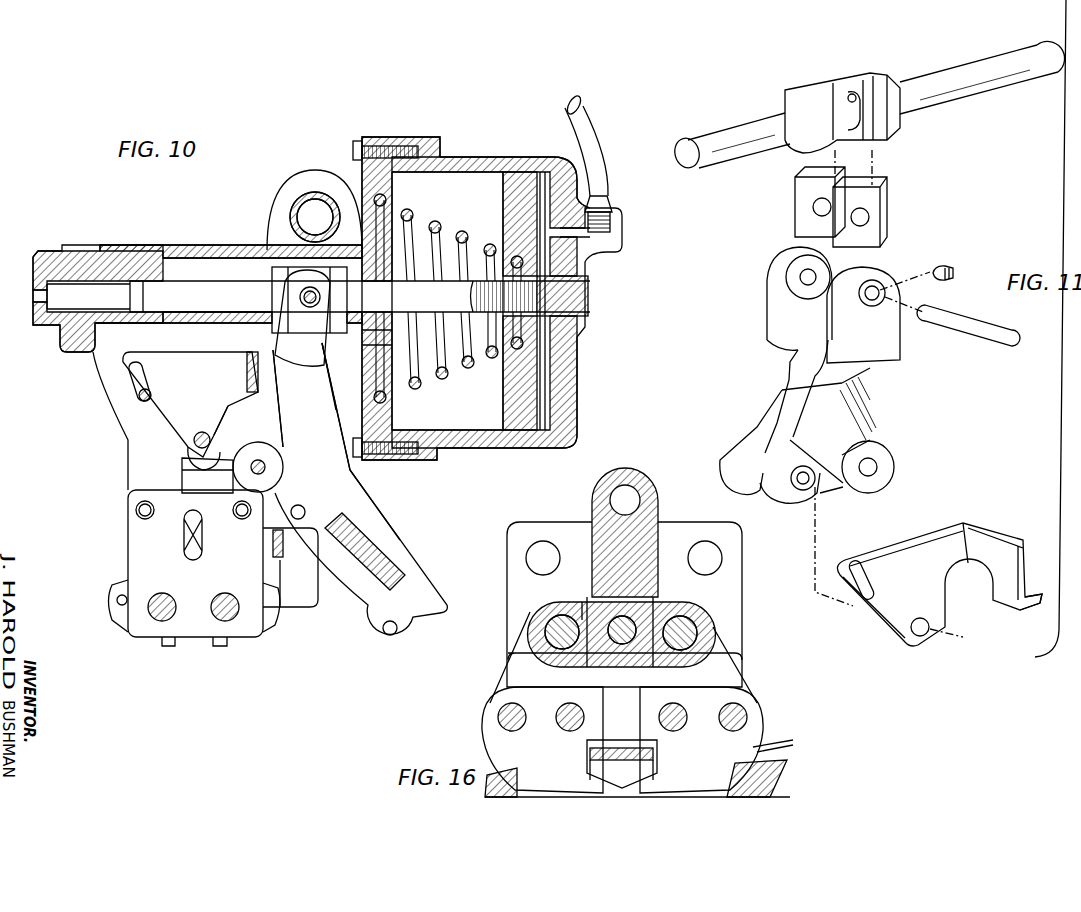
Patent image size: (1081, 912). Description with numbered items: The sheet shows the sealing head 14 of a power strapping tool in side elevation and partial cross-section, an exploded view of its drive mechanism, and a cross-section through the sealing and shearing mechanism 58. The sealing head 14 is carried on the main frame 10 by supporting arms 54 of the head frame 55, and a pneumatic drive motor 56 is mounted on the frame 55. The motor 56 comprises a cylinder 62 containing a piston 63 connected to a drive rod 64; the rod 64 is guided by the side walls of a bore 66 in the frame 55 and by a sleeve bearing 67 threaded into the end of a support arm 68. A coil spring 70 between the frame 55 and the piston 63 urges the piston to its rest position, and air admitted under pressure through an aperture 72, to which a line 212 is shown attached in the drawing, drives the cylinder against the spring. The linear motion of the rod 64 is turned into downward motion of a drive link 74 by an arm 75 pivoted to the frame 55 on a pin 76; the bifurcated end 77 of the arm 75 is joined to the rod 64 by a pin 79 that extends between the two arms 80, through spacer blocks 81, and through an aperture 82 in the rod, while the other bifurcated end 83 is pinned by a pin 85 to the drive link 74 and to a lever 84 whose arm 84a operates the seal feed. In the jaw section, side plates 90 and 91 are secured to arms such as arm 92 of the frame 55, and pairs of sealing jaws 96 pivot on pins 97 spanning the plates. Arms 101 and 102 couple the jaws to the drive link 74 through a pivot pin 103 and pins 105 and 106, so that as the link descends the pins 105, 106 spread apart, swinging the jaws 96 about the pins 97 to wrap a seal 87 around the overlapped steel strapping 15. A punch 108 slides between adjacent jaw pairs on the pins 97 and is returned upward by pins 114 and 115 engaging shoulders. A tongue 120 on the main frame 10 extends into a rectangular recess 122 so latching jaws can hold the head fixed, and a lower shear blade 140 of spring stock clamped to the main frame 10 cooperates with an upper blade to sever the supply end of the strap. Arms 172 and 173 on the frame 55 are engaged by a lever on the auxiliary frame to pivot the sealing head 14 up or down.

In FIG. 16, the main frame 10 is at (780, 787).
In FIG. 10, the sealing head 14 is at (399, 132).
In FIG. 16, the steel strapping 15 is at (633, 752).
In FIG. 10, the supporting arms 54 is at (407, 554).
In FIG. 10, the frame 55 is at (366, 486).
In FIG. 10, the pneumatic drive motor 56 is at (590, 401).
In FIG. 10, the sealing and shearing mechanism 58 is at (129, 649).
In FIG. 16, the sealing and shearing mechanism 58 is at (744, 650).
In FIG. 10, the cylinder 62 is at (453, 170).
In FIG. 10, the piston 63 is at (503, 188).
In FIG. 10, the drive rod 64 is at (452, 307).
In FIG. 11, the drive rod 64 is at (983, 90).
In FIG. 10, the bore 66 is at (364, 342).
In FIG. 10, the sleeve bearing 67 is at (33, 268).
In FIG. 10, the support arm 68 is at (92, 244).
In FIG. 10, the coil spring 70 is at (448, 375).
In FIG. 10, the aperture 72 is at (612, 232).
In FIG. 10, the drive link 74 is at (183, 473).
In FIG. 16, the drive link 74 is at (663, 473).
In FIG. 10, the arm 75 is at (283, 427).
In FIG. 11, the arm 75 is at (780, 369).
In FIG. 10, the pin 76 is at (267, 467).
In FIG. 10, the bifurcated end 77 is at (318, 360).
In FIG. 11, the bifurcated end 77 is at (868, 268).
In FIG. 10, the pin 79 is at (311, 305).
In FIG. 11, the pin 79 is at (965, 327).
In FIG. 10, the arms 80 is at (275, 335).
In FIG. 11, the arms 80 is at (770, 302).
In FIG. 10, the spacer blocks 81 is at (280, 270).
In FIG. 11, the spacer blocks 81 is at (795, 200).
In FIG. 11, the aperture 82 is at (852, 95).
In FIG. 10, the end 83 is at (185, 455).
In FIG. 11, the end 83 is at (765, 488).
In FIG. 10, the lever 84 is at (190, 404).
In FIG. 11, the lever 84 is at (922, 572).
In FIG. 11, the arm 84a is at (1037, 600).
In FIG. 10, the pin 85 is at (201, 433).
In FIG. 10, the seal 87 is at (247, 380).
In FIG. 16, the seal 87 is at (656, 752).
In FIG. 16, the side plate 90 is at (707, 527).
In FIG. 10, the side plate 91 is at (127, 551).
In FIG. 10, the arm 92 is at (127, 449).
In FIG. 10, the sealing jaws 96 is at (113, 612).
In FIG. 16, the sealing jaws 96 is at (487, 697).
In FIG. 10, the pins 97 is at (168, 590).
In FIG. 16, the pins 97 is at (575, 732).
In FIG. 16, the arm 101 is at (659, 618).
In FIG. 16, the arm 102 is at (582, 618).
In FIG. 10, the pivot pin 103 is at (188, 522).
In FIG. 16, the pivot pin 103 is at (627, 638).
In FIG. 16, the pin 105 is at (553, 625).
In FIG. 16, the pin 106 is at (690, 627).
In FIG. 16, the punch 108 is at (728, 683).
In FIG. 16, the pin 114 is at (505, 731).
In FIG. 16, the pin 115 is at (730, 733).
In FIG. 16, the tongue 120 is at (634, 783).
In FIG. 16, the recess 122 is at (500, 775).
In FIG. 16, the lower shear blade 140 is at (793, 743).
In FIG. 10, the arm 172 is at (268, 555).
In FIG. 10, the arm 173 is at (310, 595).
In FIG. 10, the tube 212 is at (602, 154).